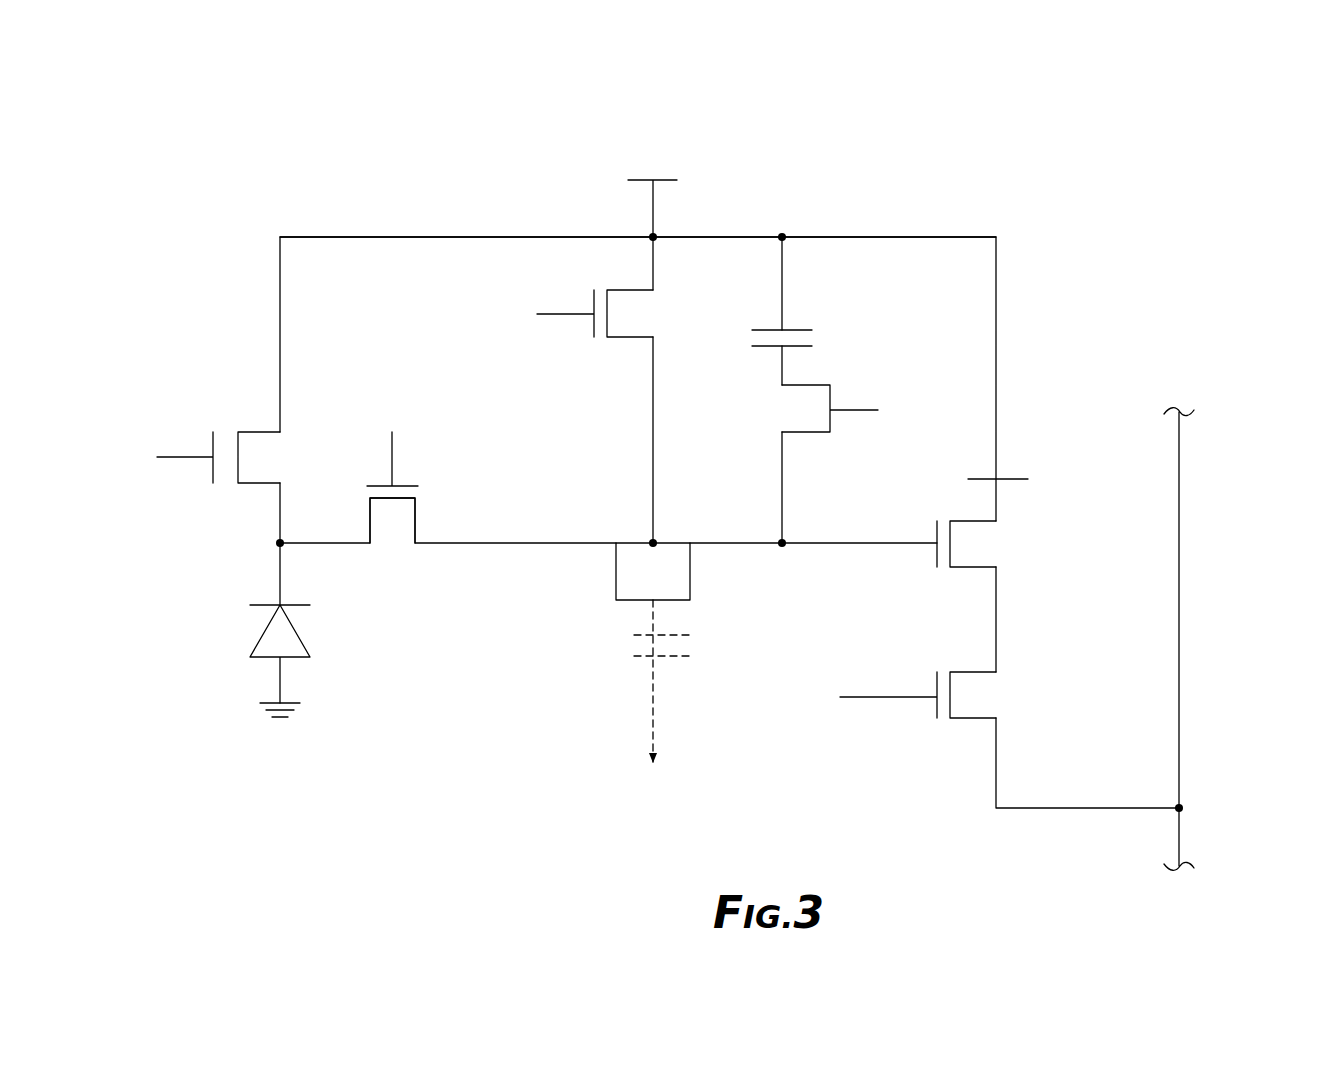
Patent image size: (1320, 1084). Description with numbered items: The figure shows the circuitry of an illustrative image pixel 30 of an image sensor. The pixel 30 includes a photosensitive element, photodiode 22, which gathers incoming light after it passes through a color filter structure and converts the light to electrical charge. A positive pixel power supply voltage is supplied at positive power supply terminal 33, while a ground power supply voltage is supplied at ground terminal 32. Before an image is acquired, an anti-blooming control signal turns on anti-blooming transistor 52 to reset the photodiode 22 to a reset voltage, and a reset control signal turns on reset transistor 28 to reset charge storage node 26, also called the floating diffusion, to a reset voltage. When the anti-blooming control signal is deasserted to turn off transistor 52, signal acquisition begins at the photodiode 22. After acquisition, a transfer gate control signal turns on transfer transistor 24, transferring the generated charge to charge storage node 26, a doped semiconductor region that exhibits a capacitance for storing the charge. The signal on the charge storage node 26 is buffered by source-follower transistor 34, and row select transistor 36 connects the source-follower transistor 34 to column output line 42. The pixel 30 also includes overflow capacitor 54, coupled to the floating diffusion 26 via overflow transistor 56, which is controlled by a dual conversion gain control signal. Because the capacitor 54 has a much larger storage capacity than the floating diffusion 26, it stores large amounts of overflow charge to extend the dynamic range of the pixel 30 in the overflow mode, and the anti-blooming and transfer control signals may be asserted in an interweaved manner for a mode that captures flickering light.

The photodiode 22 is at (265, 630).
The transfer transistor 24 is at (370, 487).
The charge storage node 26 is at (690, 568).
The reset transistor 28 is at (594, 337).
The image pixel 30 is at (1055, 161).
The ground terminal 32 is at (253, 712).
The positive power supply terminal 33 is at (648, 170).
The source-follower transistor 34 is at (985, 567).
The row select transistor 36 is at (955, 718).
The column output line 42 is at (1180, 535).
The anti-blooming transistor 52 is at (265, 432).
The overflow capacitor 54 is at (812, 346).
The overflow transistor 56 is at (812, 432).